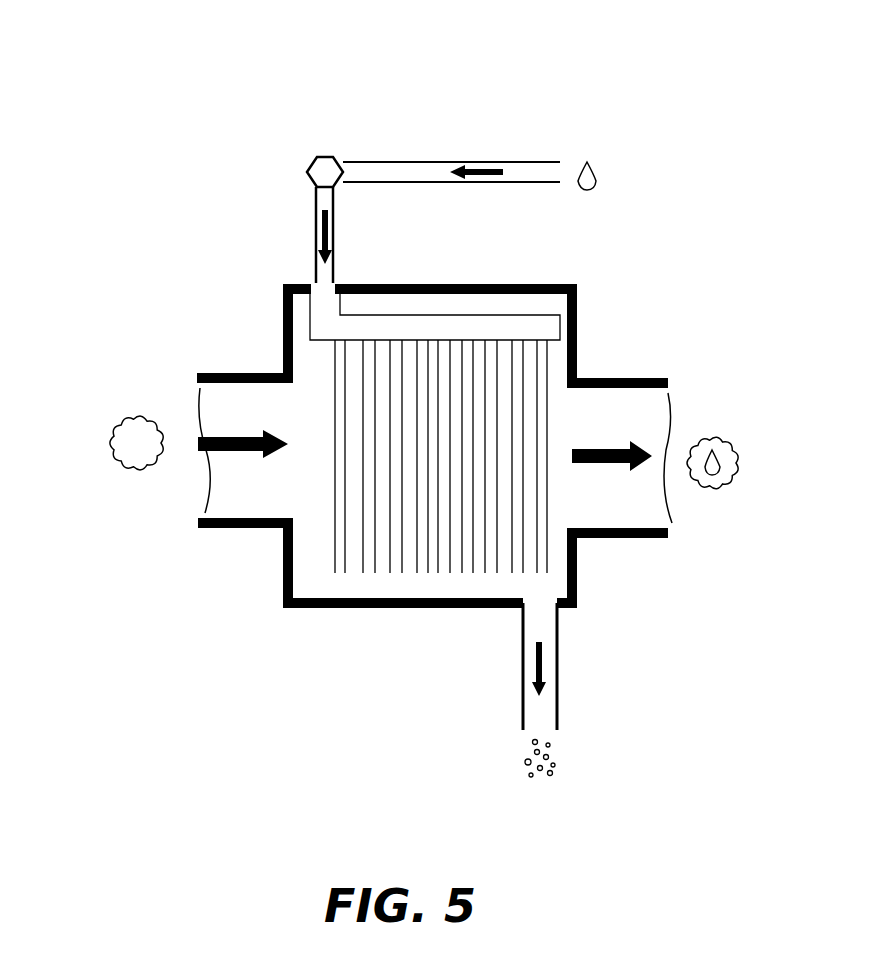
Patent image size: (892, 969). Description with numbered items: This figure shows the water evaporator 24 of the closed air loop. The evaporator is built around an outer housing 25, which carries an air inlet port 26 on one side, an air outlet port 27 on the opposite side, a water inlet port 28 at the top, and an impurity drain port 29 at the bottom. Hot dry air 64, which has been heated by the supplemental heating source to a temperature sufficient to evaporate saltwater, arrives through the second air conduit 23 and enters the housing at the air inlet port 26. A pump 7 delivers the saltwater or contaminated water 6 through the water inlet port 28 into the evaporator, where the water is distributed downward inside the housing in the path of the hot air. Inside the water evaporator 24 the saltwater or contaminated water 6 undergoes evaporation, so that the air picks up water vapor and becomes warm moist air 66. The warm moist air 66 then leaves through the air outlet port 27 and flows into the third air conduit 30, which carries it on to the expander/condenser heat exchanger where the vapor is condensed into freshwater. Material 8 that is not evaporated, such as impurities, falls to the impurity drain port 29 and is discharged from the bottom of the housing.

The water evaporator 24 is at (628, 46).
The outer housing 25 is at (272, 338).
The second air conduit 23 is at (200, 543).
The third air conduit 30 is at (617, 362).
The water inlet port 28 is at (323, 285).
The air inlet port 26 is at (287, 482).
The air outlet port 27 is at (572, 488).
The pump 7 is at (305, 172).
The saltwater/contaminated water 6 is at (603, 178).
The impurity drain port 29 is at (540, 612).
The drained liquid 8 is at (560, 762).
The hot dry air 64 is at (127, 447).
The warm moist air 66 is at (740, 438).